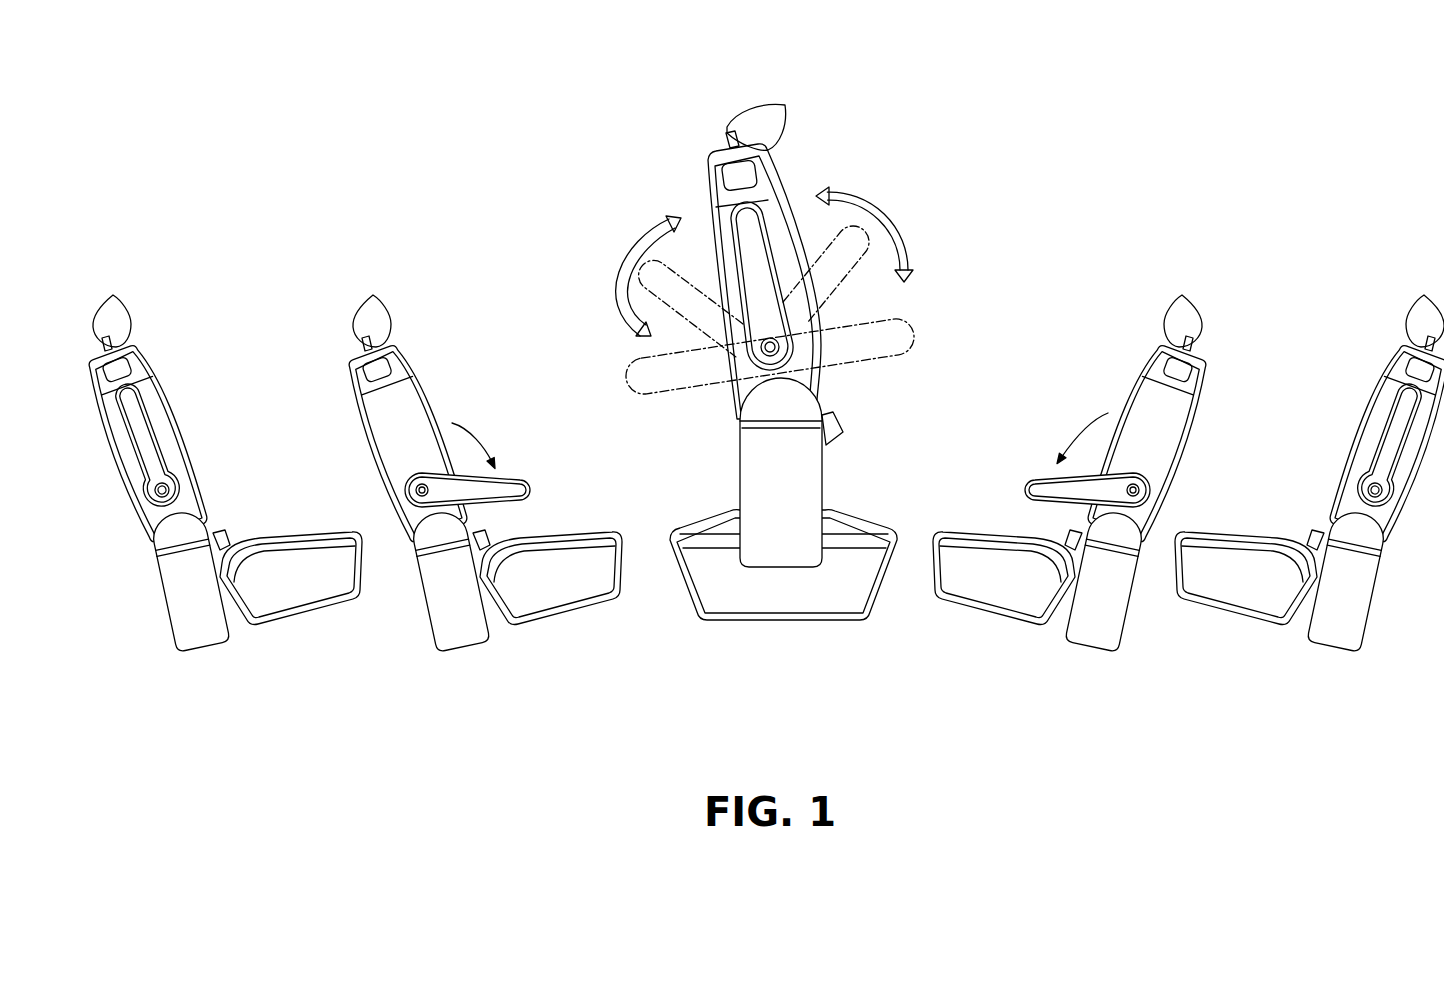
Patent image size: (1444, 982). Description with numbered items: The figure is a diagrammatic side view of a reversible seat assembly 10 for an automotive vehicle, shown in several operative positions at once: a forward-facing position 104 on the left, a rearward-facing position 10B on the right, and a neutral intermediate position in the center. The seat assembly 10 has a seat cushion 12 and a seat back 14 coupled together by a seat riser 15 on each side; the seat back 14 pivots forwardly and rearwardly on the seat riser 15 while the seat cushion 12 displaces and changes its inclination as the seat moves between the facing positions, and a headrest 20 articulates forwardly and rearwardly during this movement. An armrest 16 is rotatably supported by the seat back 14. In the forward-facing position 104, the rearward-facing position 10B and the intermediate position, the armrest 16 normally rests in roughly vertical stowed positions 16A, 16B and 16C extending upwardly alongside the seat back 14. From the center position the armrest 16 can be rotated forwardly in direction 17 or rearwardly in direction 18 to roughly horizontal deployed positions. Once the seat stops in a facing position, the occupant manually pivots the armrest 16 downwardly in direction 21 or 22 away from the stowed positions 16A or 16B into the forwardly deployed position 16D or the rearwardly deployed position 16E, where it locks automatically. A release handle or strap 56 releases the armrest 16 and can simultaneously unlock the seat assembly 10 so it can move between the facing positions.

The reversible seat assembly 10 is at (138, 262).
The rearward-facing position 10B is at (1367, 284).
The forward-facing position 104 is at (157, 302).
The seat cushion 12 is at (303, 588).
The seat back 14 is at (132, 487).
The seat riser 15 is at (190, 617).
The armrest 16 is at (750, 233).
The stowed armrest position 16A is at (138, 428).
The stowed armrest position 16B is at (1403, 408).
The stowed armrest position 16C is at (755, 270).
The first forwardly deployed position 16D is at (505, 474).
The second deployed position 16E is at (1040, 483).
The reference arrow 17 is at (890, 205).
The reference arrow 18 is at (619, 268).
The headrest 20 is at (108, 312).
The forward direction 21 is at (470, 430).
The rearward direction 22 is at (1072, 427).
The actuation release handle or strap 56 is at (218, 537).